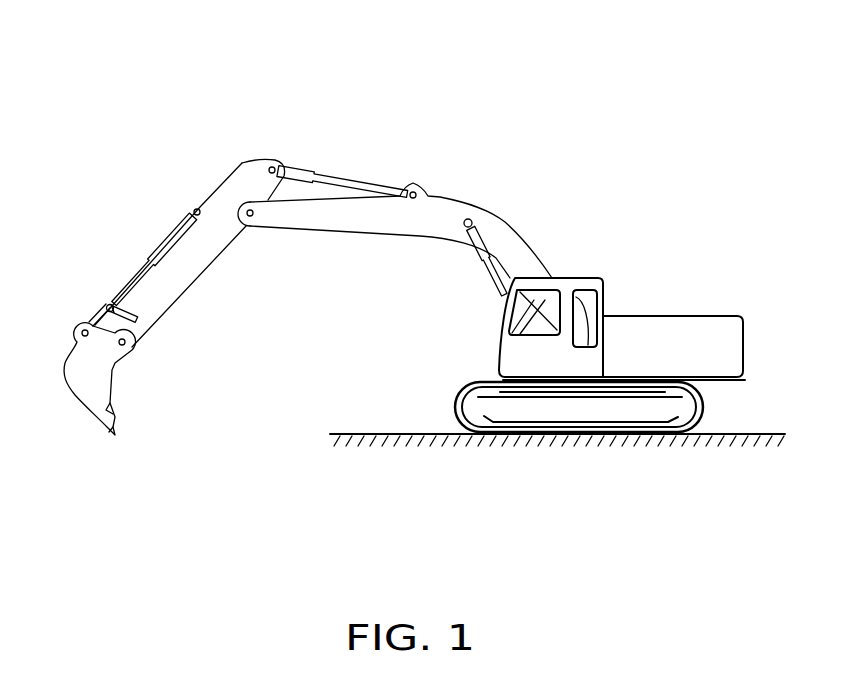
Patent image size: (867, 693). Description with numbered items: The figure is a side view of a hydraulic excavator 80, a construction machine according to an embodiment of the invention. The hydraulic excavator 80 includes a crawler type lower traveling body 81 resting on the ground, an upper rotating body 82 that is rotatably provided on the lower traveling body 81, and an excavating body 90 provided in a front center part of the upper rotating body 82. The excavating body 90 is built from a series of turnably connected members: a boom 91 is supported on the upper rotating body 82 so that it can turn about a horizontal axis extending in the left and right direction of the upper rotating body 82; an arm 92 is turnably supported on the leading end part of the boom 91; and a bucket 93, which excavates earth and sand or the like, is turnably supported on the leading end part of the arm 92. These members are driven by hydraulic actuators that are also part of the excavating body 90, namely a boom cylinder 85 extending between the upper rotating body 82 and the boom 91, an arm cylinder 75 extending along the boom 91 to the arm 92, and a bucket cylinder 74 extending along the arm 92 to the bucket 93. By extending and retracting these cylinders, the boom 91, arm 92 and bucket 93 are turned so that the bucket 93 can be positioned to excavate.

The bucket cylinder 74 is at (155, 256).
The arm cylinder 75 is at (322, 173).
The hydraulic excavator 80 is at (722, 303).
The lower traveling body 81 is at (703, 402).
The upper rotating body 82 is at (604, 313).
The boom cylinder 85 is at (505, 298).
The excavating body 90 is at (517, 205).
The boom 91 is at (437, 202).
The arm 92 is at (212, 200).
The bucket 93 is at (80, 360).